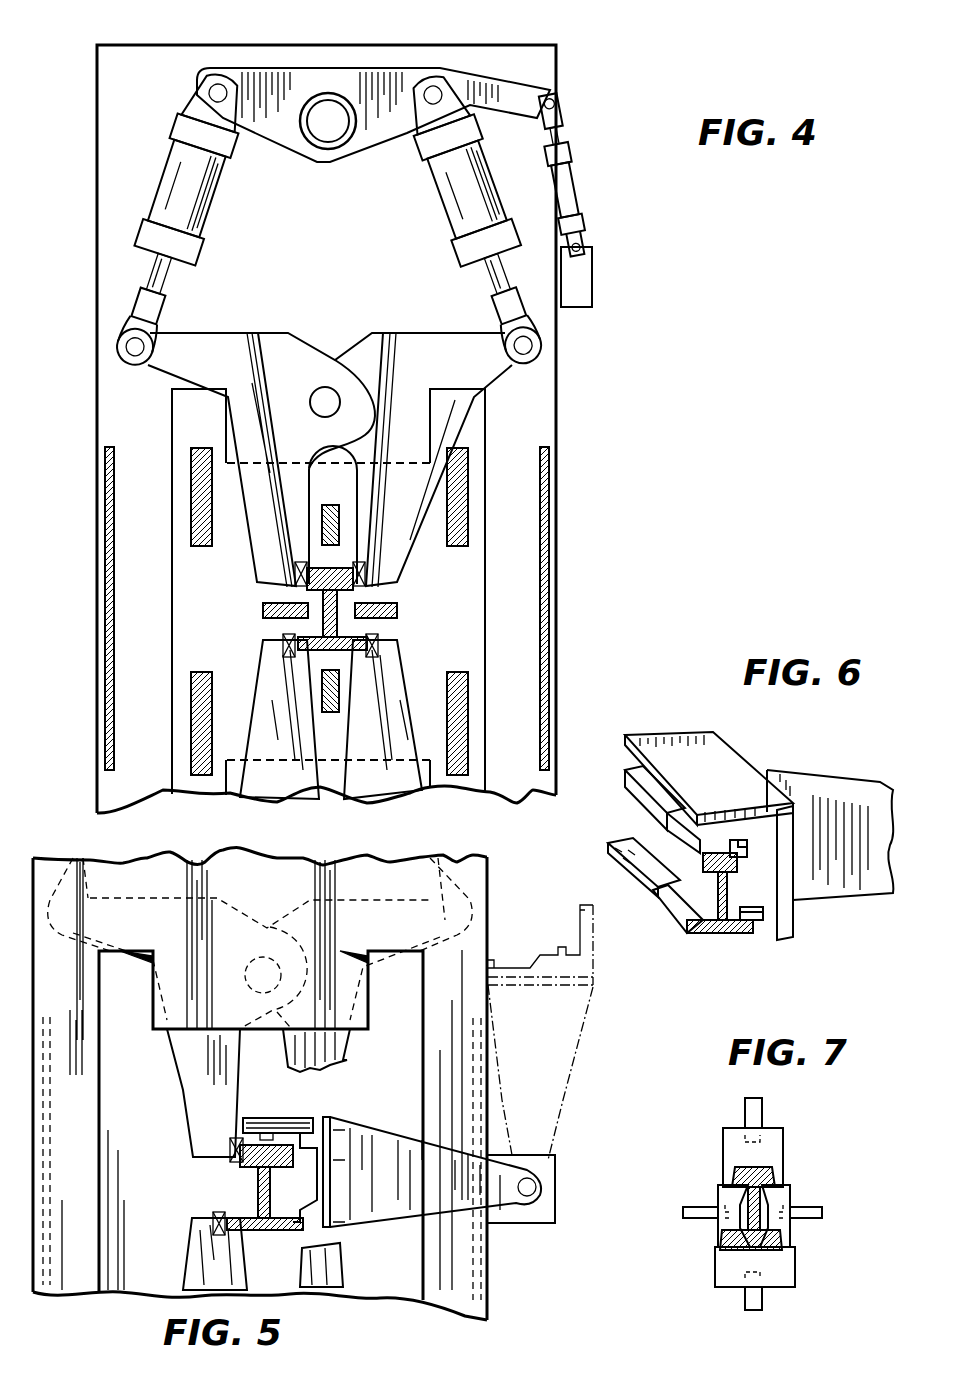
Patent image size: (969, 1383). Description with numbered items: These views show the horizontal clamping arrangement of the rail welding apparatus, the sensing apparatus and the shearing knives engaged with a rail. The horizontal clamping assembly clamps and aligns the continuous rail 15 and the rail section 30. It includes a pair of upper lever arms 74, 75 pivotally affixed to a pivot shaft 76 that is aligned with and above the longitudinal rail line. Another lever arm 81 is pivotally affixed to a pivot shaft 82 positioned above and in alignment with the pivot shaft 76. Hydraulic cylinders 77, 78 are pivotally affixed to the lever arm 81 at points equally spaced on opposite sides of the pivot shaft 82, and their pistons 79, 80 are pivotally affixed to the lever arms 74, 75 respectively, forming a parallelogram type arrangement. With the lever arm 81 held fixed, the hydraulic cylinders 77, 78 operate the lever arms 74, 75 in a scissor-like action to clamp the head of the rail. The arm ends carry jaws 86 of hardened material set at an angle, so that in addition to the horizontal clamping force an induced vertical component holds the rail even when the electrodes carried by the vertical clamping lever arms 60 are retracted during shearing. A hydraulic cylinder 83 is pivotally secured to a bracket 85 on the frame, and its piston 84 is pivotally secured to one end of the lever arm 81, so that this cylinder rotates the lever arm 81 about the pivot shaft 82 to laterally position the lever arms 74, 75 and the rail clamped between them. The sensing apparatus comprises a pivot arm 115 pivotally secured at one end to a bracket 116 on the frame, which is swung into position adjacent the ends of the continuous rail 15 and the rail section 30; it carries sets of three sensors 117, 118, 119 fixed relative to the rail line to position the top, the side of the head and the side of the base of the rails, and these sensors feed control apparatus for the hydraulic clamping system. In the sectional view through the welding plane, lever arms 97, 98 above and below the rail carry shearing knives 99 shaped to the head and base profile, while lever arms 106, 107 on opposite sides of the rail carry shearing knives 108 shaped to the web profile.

In FIG. 6, the continuous rail 15 is at (612, 852).
In FIG. 6, the rail section 30 is at (690, 913).
In FIG. 4, the upper lever arms 60 is at (190, 450).
In FIG. 4, the upper lever arm 74 is at (266, 340).
In FIG. 5, the upper lever arm 74 is at (180, 1060).
In FIG. 4, the upper lever arm 75 is at (420, 340).
In FIG. 5, the upper lever arm 75 is at (343, 1068).
In FIG. 4, the pivot shaft 76 is at (330, 392).
In FIG. 4, the hydraulic cylinder 77 is at (210, 218).
In FIG. 4, the hydraulic cylinder 78 is at (442, 204).
In FIG. 4, the piston 79 is at (168, 283).
In FIG. 4, the piston 80 is at (480, 270).
In FIG. 4, the lever arm 81 is at (345, 168).
In FIG. 4, the pivot shaft 82 is at (328, 105).
In FIG. 4, the hydraulic cylinder 83 is at (580, 190).
In FIG. 4, the piston 84 is at (568, 134).
In FIG. 4, the bracket 85 is at (582, 270).
In FIG. 4, the jaws 86 is at (292, 572).
In FIG. 4, the lever arm 97 is at (338, 510).
In FIG. 7, the lever arm 97 is at (765, 1100).
In FIG. 4, the lever arm 98 is at (320, 680).
In FIG. 7, the lever arm 98 is at (746, 1300).
In FIG. 7, the shearing knives 99 is at (788, 1142).
In FIG. 4, the lever arm 106 is at (262, 608).
In FIG. 7, the lever arm 106 is at (696, 1206).
In FIG. 4, the lever arm 107 is at (398, 608).
In FIG. 7, the lever arm 107 is at (812, 1206).
In FIG. 7, the shearing knives 108 is at (725, 1230).
In FIG. 5, the pivot arm 115 is at (388, 1130).
In FIG. 5, the bracket 116 is at (555, 1205).
In FIG. 5, the sensor 117 is at (288, 1118).
In FIG. 6, the sensor 117 is at (628, 770).
In FIG. 5, the sensor 118 is at (290, 1170).
In FIG. 6, the sensor 118 is at (748, 855).
In FIG. 5, the sensor 119 is at (300, 1235).
In FIG. 6, the sensor 119 is at (755, 922).